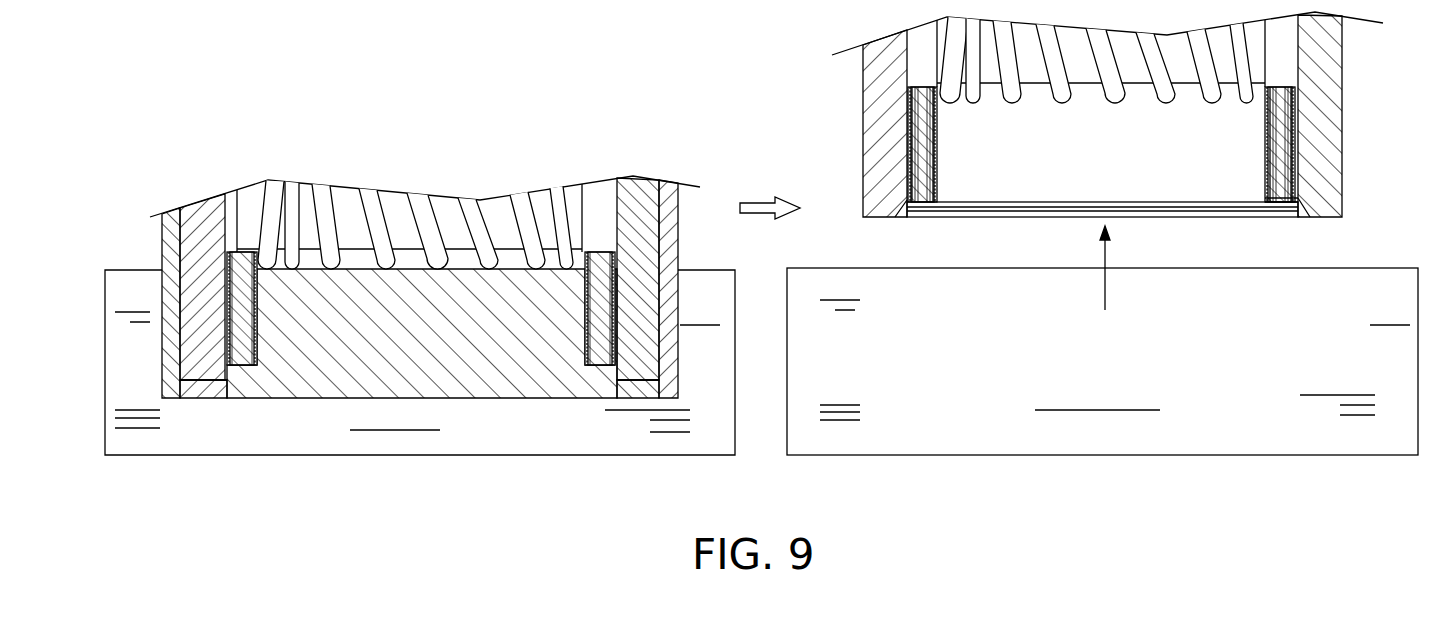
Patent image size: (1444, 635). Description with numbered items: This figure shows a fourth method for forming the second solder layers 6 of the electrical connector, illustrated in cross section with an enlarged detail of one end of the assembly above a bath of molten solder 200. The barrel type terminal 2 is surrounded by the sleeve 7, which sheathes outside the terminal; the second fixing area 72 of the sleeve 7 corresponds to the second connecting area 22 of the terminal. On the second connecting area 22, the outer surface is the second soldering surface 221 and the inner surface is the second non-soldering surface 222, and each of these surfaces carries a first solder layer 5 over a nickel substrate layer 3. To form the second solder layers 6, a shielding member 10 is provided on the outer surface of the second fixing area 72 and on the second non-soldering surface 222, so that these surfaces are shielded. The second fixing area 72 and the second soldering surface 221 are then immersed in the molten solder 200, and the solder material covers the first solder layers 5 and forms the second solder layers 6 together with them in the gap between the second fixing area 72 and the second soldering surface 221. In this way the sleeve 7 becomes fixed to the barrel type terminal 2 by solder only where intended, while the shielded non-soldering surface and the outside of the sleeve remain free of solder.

The barrel type terminal 2 is at (598, 353).
The nickel substrate layer 3 is at (625, 298).
The first solder layer 5 is at (612, 262).
The second solder layer 6 is at (912, 138).
The sleeve 7 is at (648, 222).
The shielding member 10 is at (172, 248).
The second connecting area 22 is at (1280, 205).
The second fixing area 72 is at (182, 382).
The molten solder 200 is at (305, 418).
The second soldering surface 221 is at (914, 153).
The second non-soldering surface 222 is at (985, 200).